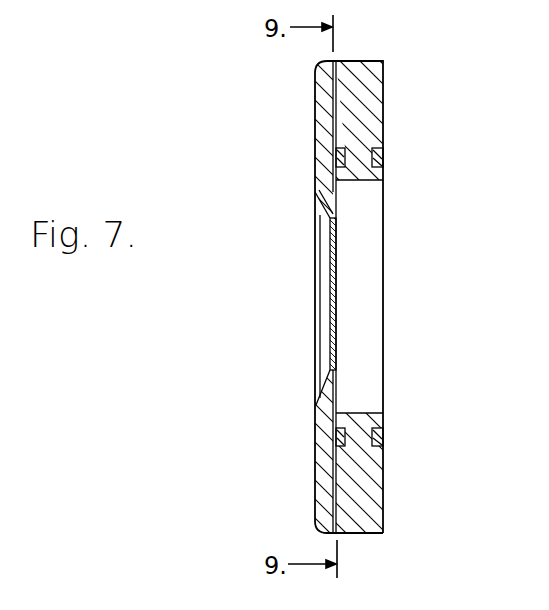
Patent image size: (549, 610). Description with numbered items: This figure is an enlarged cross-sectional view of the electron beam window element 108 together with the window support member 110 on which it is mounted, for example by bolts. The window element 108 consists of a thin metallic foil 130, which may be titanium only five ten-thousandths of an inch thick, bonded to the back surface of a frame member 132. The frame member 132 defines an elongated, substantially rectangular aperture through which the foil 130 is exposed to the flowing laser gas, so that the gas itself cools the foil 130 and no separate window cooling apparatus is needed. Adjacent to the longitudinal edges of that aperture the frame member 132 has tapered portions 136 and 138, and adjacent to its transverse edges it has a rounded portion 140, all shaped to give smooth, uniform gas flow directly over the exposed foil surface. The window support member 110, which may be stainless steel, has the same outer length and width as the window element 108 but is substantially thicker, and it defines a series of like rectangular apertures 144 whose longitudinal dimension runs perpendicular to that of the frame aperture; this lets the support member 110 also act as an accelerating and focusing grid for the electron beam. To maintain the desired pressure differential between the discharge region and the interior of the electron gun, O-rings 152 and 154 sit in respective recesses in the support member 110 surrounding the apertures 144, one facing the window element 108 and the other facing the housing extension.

The electron beam window element 108 is at (317, 491).
The window support member 110 is at (373, 61).
The thin metallic foil 130 is at (332, 305).
The frame member 132 is at (315, 92).
The tapered portion 136 is at (315, 210).
The tapered portion 138 is at (324, 376).
The rounded portion 140 is at (323, 226).
The substantially rectangular apertures 144 is at (368, 302).
The O-ring 152 is at (340, 436).
The O-ring 154 is at (380, 438).